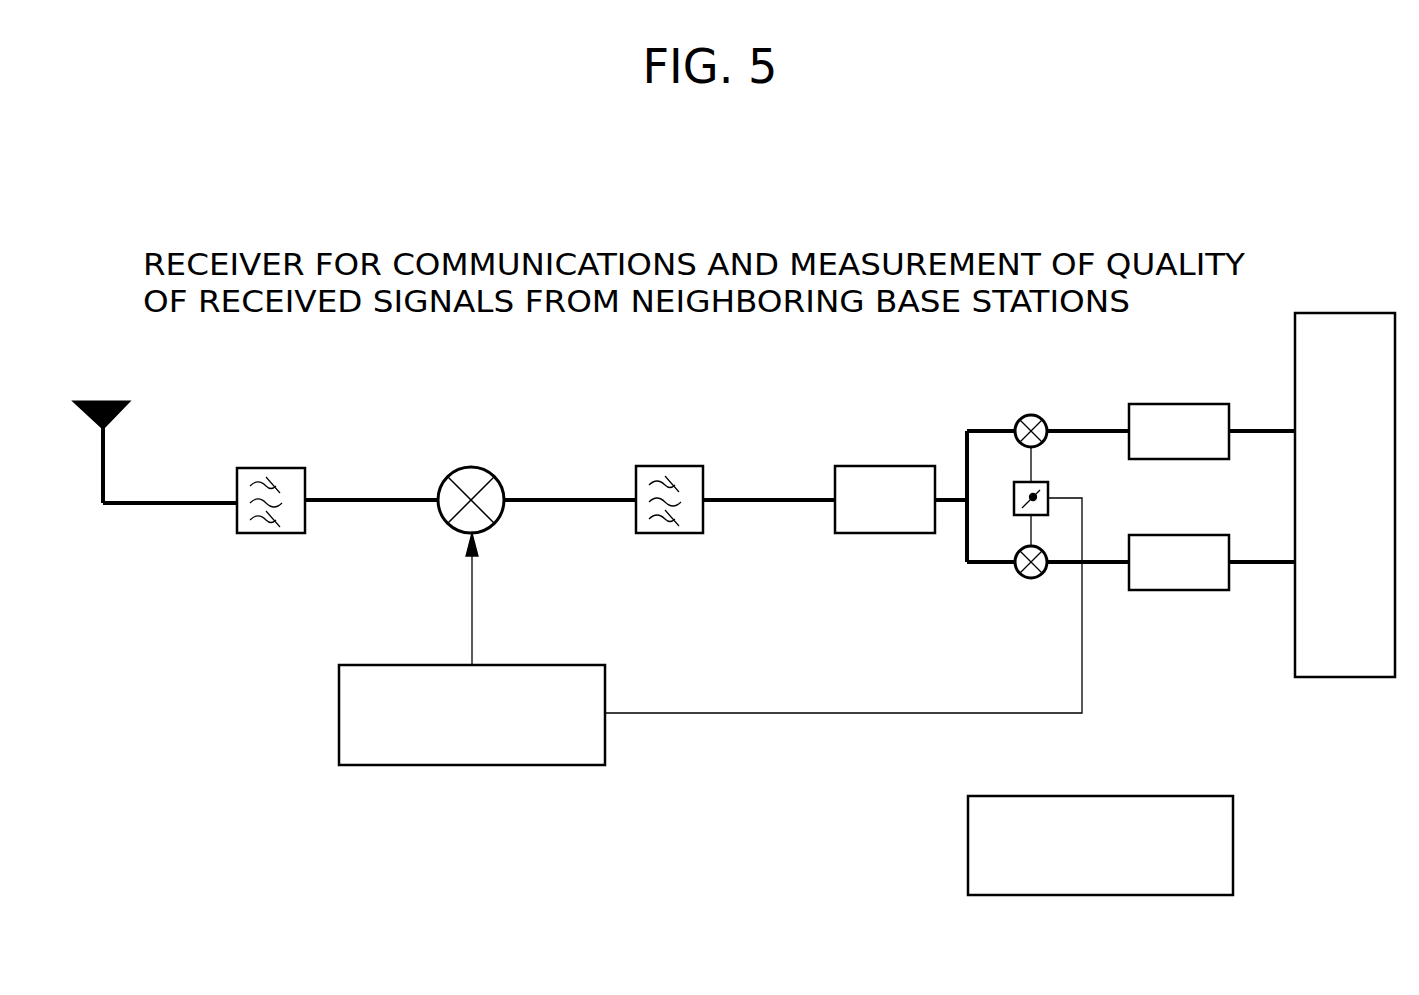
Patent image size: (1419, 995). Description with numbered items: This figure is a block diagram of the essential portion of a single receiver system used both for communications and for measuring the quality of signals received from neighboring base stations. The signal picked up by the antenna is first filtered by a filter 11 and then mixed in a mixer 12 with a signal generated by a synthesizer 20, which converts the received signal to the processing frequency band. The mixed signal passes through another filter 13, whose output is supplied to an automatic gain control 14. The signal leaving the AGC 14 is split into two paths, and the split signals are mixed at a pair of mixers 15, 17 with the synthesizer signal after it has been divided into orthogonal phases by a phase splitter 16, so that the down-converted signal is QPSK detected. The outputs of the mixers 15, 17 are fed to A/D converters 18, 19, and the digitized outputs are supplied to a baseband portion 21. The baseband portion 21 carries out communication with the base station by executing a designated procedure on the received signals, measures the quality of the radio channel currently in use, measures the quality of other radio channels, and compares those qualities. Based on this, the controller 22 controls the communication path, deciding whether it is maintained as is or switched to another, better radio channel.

The filter 11 is at (270, 468).
The mixer 12 is at (472, 467).
The filter 13 is at (670, 466).
The automatic gain control 14 is at (880, 466).
The mixer 15 is at (1028, 416).
The phase splitter 16 is at (1049, 491).
The mixer 17 is at (1020, 578).
The A/D converter 18 is at (1183, 404).
The A/D converter 19 is at (1183, 535).
The synthesizer 20 is at (400, 665).
The baseband portion 21 is at (1343, 313).
The controller 22 is at (1145, 796).